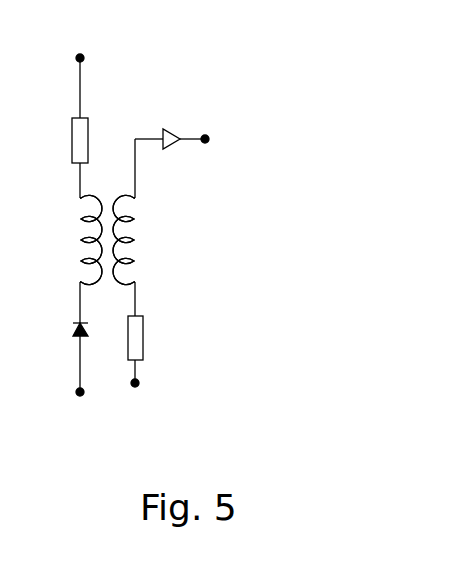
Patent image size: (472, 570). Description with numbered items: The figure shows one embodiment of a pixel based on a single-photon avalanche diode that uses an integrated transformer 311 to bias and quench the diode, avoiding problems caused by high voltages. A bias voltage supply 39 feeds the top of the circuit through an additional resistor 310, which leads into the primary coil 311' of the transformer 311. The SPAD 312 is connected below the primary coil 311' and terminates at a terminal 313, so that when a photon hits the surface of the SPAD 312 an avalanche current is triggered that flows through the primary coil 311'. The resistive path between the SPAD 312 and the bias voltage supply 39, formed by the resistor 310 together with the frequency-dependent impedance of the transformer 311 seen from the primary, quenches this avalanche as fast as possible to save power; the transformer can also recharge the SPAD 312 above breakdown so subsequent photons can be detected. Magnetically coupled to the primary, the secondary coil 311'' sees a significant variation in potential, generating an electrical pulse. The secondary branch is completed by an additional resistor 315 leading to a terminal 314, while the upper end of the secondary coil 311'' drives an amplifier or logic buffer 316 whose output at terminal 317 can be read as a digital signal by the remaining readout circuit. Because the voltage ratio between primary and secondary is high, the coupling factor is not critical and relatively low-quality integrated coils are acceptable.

The bias voltage supply 39 is at (80, 66).
The additional resistor 310 is at (53, 158).
The integrated transformer 311 is at (107, 227).
The primary coil 311' is at (60, 239).
The secondary coil 311'' is at (162, 239).
The SPAD 312 is at (53, 337).
The terminal 313 is at (84, 411).
The terminal 314 is at (139, 404).
The additional resistor 315 is at (164, 332).
The amplifier or logic buffer 316 is at (170, 142).
The output terminal 317 is at (238, 141).